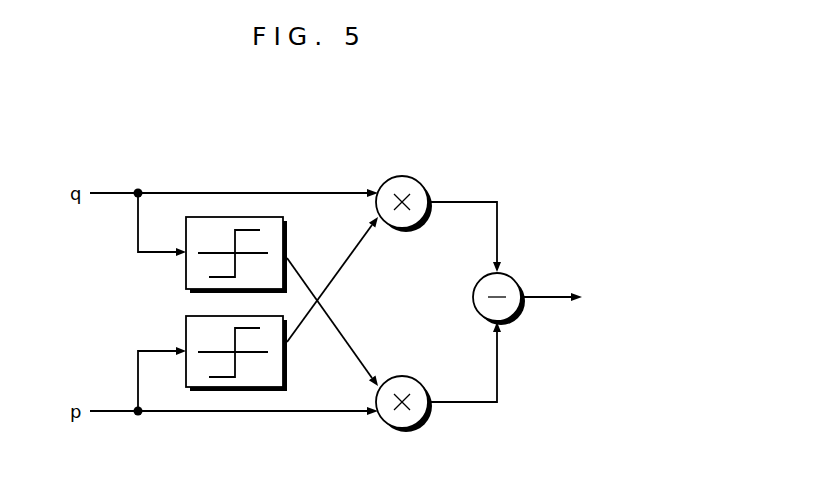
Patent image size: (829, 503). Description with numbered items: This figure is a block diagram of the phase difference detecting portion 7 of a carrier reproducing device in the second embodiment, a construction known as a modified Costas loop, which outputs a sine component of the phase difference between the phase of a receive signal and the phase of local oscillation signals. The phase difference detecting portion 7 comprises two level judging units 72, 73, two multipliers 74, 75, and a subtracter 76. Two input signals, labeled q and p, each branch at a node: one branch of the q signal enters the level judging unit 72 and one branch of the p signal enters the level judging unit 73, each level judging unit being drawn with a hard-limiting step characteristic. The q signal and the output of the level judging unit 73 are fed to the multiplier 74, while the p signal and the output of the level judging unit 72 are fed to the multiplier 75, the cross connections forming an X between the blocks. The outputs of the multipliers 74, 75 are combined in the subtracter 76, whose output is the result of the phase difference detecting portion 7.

The phase difference detecting portion 7 is at (524, 157).
The level judging unit 72 is at (242, 217).
The level judging unit 73 is at (217, 387).
The multiplier 74 is at (415, 173).
The multiplier 75 is at (420, 422).
The subtracter 76 is at (508, 282).